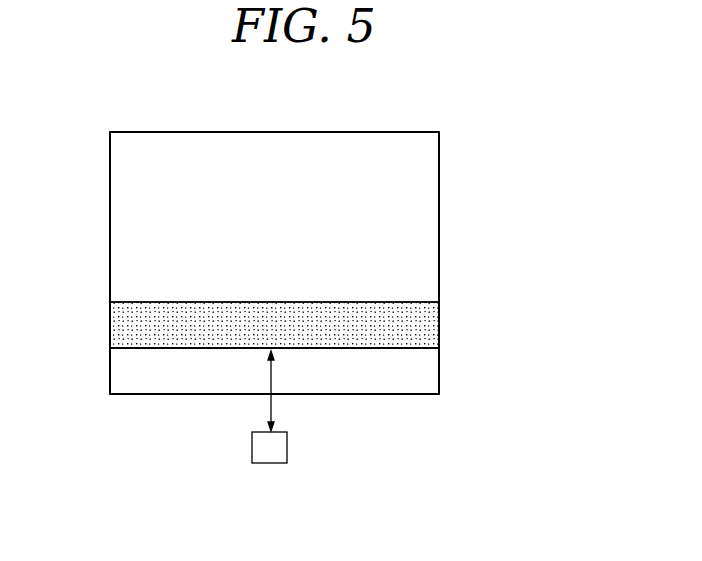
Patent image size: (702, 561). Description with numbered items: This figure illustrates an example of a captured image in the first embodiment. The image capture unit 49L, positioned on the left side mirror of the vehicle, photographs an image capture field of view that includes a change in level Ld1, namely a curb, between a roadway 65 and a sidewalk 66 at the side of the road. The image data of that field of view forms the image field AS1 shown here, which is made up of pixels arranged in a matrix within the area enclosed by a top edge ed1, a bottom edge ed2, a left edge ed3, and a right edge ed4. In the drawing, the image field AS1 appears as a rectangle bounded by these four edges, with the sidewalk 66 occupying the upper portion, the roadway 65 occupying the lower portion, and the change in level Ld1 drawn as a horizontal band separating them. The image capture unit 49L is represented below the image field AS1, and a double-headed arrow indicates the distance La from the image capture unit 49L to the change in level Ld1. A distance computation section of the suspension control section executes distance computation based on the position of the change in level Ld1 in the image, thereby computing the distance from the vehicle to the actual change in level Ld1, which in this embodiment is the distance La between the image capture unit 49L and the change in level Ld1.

The image field AS1 is at (362, 128).
The sidewalk 66 is at (417, 194).
The top edge ed1 is at (190, 132).
The bottom edge ed2 is at (400, 395).
The left edge ed3 is at (110, 231).
The right edge ed4 is at (439, 233).
The change in level Ld1 is at (439, 323).
The roadway 65 is at (135, 375).
The distance La is at (253, 391).
The image capture unit 49L is at (272, 463).